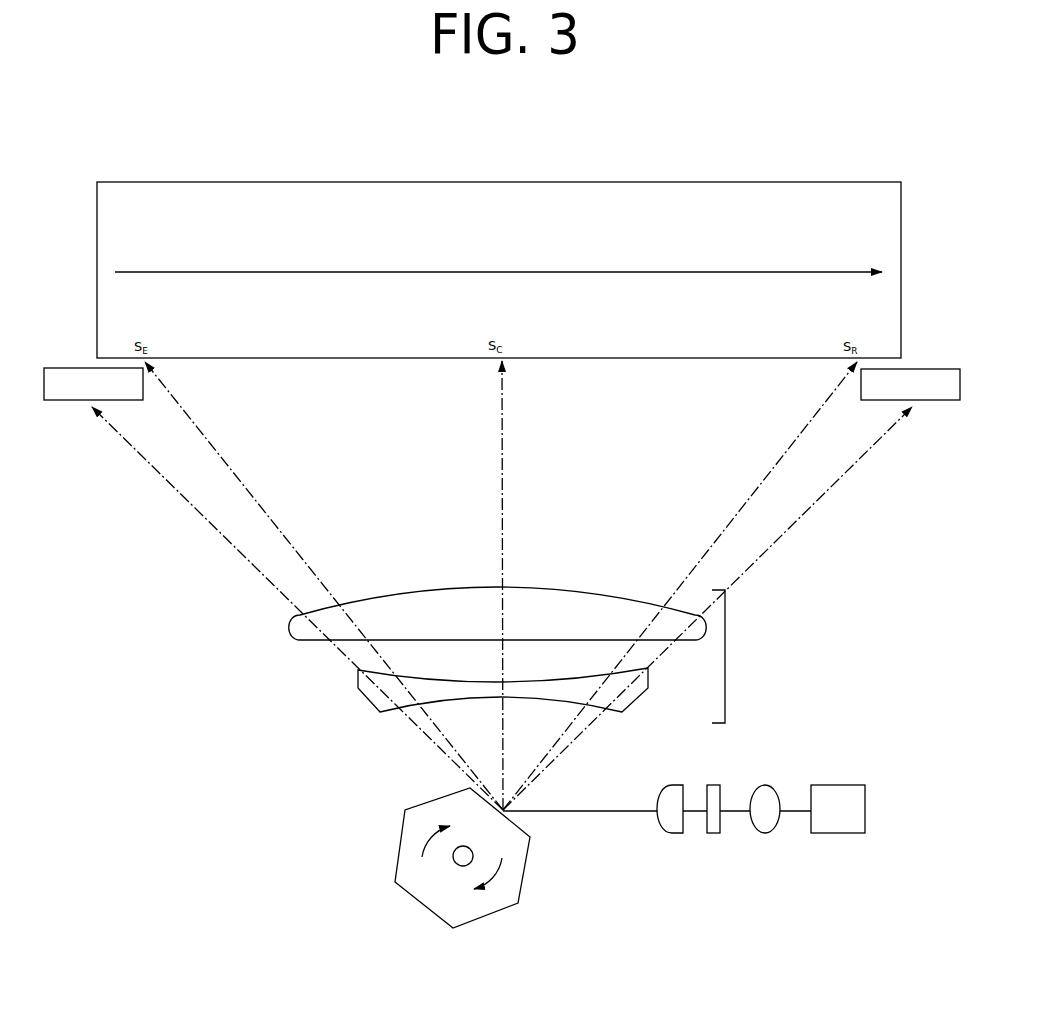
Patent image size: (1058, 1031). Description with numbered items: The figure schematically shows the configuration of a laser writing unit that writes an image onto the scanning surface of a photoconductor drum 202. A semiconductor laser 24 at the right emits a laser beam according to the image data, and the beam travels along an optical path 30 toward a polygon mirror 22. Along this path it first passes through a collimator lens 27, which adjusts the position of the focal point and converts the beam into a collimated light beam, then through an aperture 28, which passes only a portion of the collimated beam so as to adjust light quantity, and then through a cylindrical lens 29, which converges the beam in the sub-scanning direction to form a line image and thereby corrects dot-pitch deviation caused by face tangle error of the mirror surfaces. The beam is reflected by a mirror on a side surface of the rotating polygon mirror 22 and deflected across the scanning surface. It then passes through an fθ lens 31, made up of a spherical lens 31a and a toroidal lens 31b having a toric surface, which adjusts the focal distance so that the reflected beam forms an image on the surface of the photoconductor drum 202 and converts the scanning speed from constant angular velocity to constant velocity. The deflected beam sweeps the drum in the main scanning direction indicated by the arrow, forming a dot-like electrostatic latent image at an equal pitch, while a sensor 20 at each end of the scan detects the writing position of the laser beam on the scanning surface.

The photoconductor drum 202 is at (502, 182).
The sensor 20 is at (93, 368).
The fθ lens 31 is at (727, 655).
The spherical lens 31a is at (358, 690).
The toroidal lens 31b is at (290, 635).
The polygon mirror 22 is at (423, 905).
The optical path 30 is at (557, 811).
The cylindrical lens 29 is at (672, 833).
The aperture 28 is at (712, 833).
The collimator lens 27 is at (768, 833).
The semiconductor laser 24 is at (838, 833).